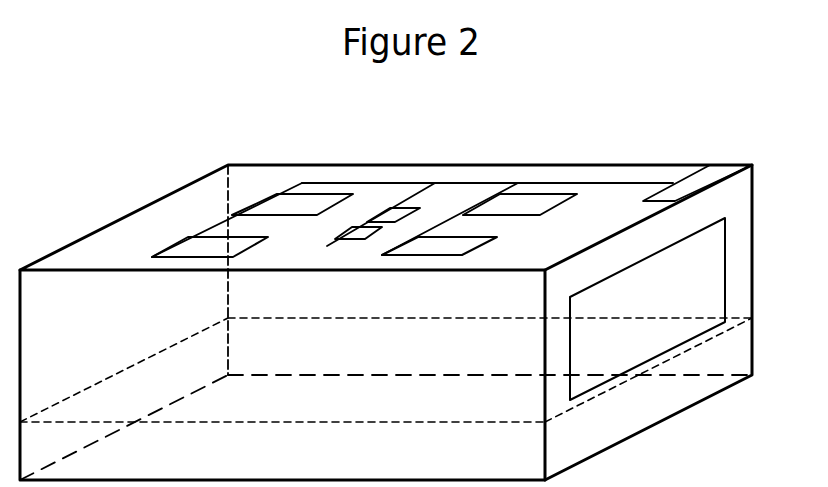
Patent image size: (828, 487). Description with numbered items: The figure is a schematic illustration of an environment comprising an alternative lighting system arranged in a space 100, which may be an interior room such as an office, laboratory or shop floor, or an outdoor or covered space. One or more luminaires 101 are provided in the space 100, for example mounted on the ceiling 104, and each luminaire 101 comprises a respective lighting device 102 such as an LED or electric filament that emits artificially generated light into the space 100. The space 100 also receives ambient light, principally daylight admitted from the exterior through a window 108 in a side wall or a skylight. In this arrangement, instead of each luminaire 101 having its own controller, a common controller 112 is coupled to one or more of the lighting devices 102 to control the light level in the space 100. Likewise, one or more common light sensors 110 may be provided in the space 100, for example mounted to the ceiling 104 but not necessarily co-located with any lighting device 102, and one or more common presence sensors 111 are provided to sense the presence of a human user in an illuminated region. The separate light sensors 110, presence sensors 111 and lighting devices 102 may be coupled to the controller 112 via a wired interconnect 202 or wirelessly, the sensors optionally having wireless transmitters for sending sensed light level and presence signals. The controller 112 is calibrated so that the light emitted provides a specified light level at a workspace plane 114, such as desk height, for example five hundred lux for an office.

The space 100 is at (90, 145).
The ceiling 104 is at (268, 174).
The light sensor 110 is at (407, 207).
The presence sensor 111 is at (327, 246).
The wired interconnect 202 is at (540, 146).
The controller 112 is at (727, 170).
The luminaire 101 is at (546, 221).
The lighting device 102 is at (510, 215).
The window 108 is at (707, 299).
The workspace plane 114 is at (305, 424).